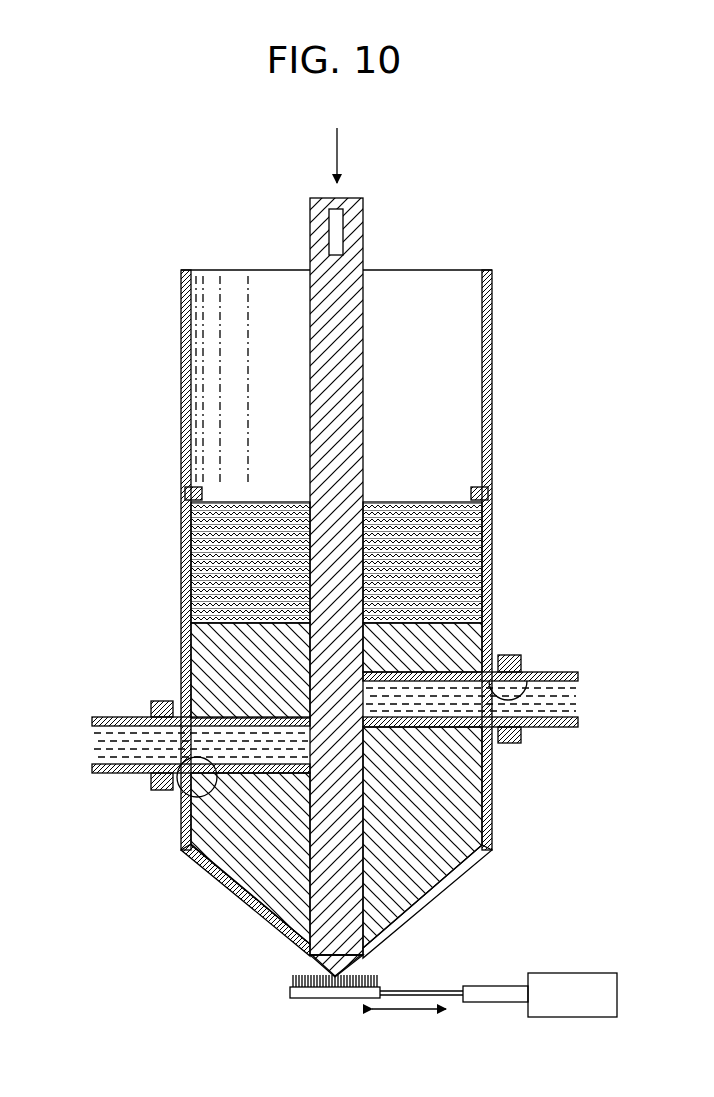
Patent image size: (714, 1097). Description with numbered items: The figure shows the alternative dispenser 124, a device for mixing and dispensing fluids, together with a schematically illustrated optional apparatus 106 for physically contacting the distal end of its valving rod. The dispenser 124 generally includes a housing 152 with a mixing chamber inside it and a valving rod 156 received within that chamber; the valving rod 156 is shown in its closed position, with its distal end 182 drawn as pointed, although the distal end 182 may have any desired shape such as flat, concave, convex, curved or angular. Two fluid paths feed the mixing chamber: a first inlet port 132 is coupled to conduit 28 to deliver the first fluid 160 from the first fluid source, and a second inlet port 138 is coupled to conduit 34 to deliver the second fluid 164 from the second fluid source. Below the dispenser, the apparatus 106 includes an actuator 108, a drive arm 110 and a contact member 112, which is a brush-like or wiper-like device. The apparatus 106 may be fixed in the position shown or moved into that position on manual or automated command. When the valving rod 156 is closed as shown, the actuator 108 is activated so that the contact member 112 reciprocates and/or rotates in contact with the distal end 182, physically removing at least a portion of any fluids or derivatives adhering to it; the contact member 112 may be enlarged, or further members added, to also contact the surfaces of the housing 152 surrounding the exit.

The dispenser 124 is at (553, 282).
The housing 152 is at (495, 383).
The valving rod 156 is at (310, 229).
The distal end 182 is at (352, 955).
The conduit 28 is at (560, 672).
The first fluid 160 is at (555, 700).
The first inlet port 132 is at (525, 690).
The conduit 34 is at (110, 717).
The second fluid 164 is at (115, 743).
The second inlet port 138 is at (200, 797).
The contact member 112 is at (313, 998).
The drive arm 110 is at (492, 1003).
The actuator 108 is at (578, 1018).
The apparatus 106 is at (575, 970).